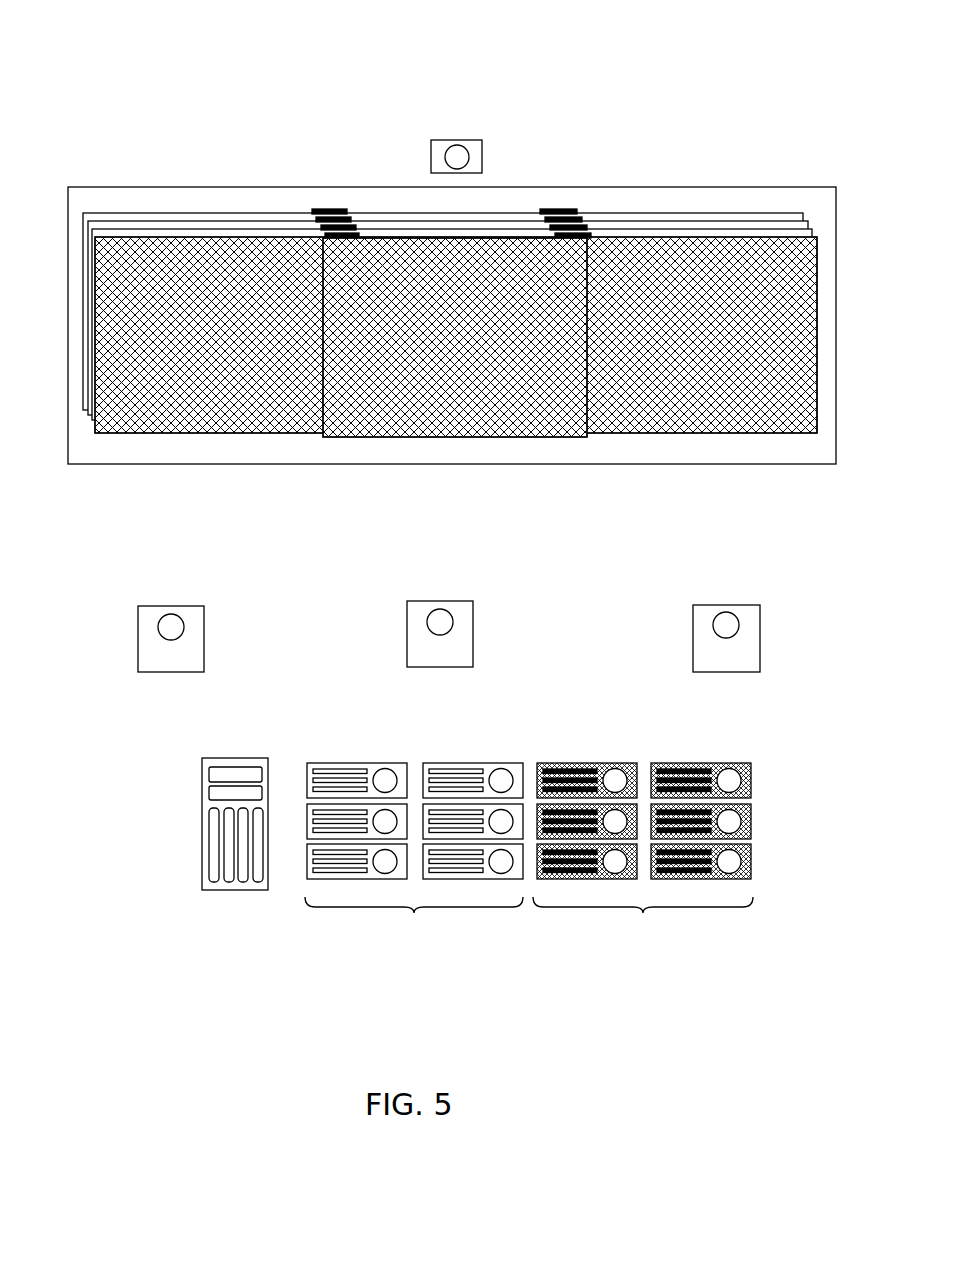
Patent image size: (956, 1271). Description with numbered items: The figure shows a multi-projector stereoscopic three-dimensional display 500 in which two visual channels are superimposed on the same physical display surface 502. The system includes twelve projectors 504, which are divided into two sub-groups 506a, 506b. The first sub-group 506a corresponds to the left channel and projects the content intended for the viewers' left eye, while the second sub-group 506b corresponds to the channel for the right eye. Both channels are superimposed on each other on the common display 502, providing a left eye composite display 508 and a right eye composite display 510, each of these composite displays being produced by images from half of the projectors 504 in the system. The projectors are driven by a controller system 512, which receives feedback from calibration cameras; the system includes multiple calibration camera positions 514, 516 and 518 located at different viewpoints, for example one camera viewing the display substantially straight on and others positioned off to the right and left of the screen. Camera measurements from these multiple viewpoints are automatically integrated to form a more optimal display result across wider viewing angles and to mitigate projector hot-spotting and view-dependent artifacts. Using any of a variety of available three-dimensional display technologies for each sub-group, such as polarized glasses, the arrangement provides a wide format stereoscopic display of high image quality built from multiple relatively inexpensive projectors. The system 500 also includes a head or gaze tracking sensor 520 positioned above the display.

The stereoscopic/3D display 500 is at (356, 126).
The display surface 502 is at (512, 200).
The projectors 504 is at (460, 765).
The first sub-group 506a is at (414, 856).
The second sub-group 506b is at (643, 856).
The left eye composite display 508 is at (261, 204).
The right eye composite display 510 is at (355, 448).
The controller system 512 is at (216, 758).
The calibration camera 514 is at (153, 612).
The calibration camera position 516 is at (466, 600).
The calibration camera position 518 is at (748, 618).
The head or gaze tracking sensor 520 is at (466, 140).